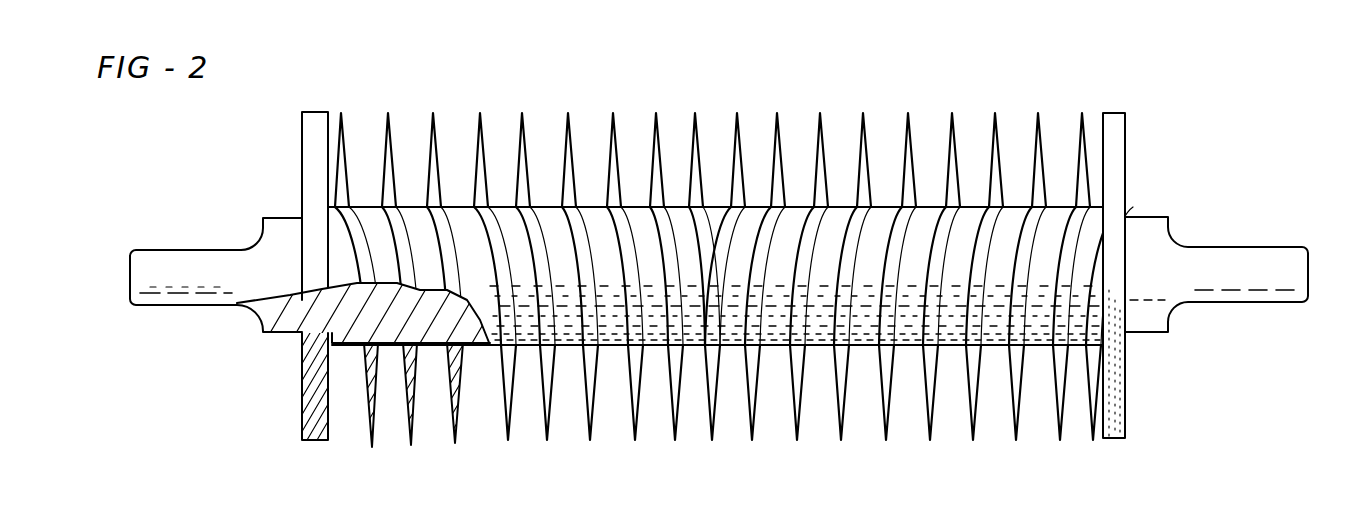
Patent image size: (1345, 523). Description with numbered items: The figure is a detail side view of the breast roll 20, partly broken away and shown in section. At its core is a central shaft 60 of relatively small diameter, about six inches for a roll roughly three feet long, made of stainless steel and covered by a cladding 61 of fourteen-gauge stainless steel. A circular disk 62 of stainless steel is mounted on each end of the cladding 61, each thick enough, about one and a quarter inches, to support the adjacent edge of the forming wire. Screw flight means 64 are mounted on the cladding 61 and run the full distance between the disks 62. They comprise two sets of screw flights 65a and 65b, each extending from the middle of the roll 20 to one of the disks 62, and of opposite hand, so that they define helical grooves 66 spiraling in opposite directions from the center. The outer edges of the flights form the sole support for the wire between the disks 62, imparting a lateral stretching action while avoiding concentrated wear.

The breast roll 20 is at (307, 88).
The central shaft 60 is at (283, 331).
The cladding 61 is at (484, 384).
The circular disk 62 is at (313, 160).
The screw flight means 64 is at (452, 425).
The first set of screw flights 65a is at (712, 101).
The second set of screw flights 65b is at (1092, 107).
The helical grooves 66 is at (567, 426).